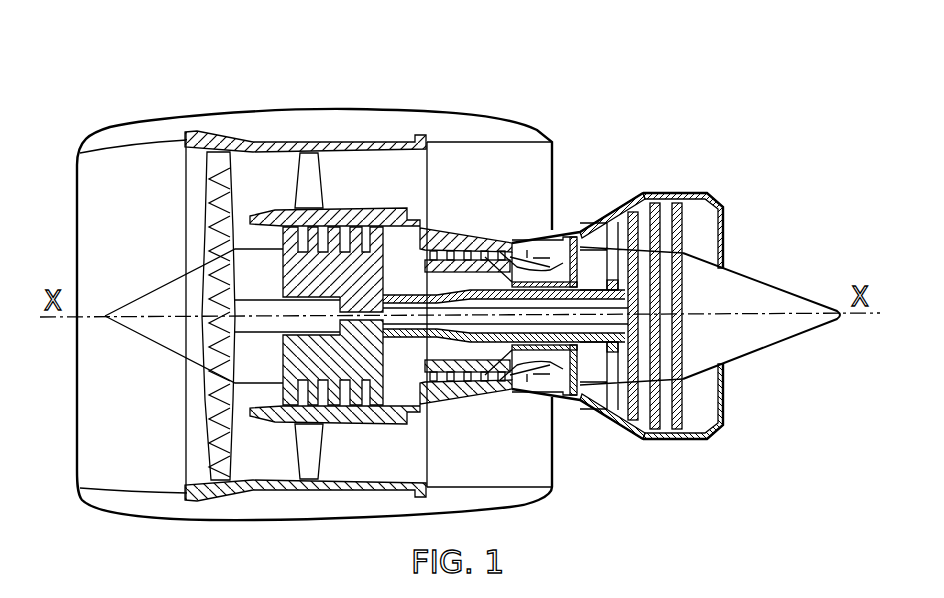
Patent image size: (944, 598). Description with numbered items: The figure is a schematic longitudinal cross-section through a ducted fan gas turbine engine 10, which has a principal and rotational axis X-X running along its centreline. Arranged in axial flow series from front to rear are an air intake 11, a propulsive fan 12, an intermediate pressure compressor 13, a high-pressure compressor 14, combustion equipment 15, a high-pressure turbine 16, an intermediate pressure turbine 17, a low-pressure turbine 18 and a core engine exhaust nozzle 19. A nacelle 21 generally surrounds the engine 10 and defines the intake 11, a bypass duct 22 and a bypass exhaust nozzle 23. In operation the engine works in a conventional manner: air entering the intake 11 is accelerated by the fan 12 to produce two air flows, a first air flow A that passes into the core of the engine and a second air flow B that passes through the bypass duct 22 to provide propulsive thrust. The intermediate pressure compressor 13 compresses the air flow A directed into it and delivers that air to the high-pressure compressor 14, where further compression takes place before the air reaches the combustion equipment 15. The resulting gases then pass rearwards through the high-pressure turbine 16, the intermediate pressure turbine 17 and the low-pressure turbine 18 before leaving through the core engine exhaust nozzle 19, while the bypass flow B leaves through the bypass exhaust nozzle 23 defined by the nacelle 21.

The ducted fan gas turbine engine 10 is at (118, 80).
The air intake 11 is at (125, 140).
The propulsive fan 12 is at (209, 441).
The intermediate pressure compressor 13 is at (350, 403).
The high-pressure compressor 14 is at (468, 232).
The combustion equipment 15 is at (517, 383).
The high-pressure turbine 16 is at (573, 398).
The intermediate pressure turbine 17 is at (606, 220).
The low-pressure turbine 18 is at (622, 423).
The core engine exhaust nozzle 19 is at (718, 194).
The nacelle 21 is at (353, 122).
The bypass duct 22 is at (508, 182).
The bypass exhaust nozzle 23 is at (549, 140).
The first air flow A is at (258, 234).
The second air flow B is at (265, 178).